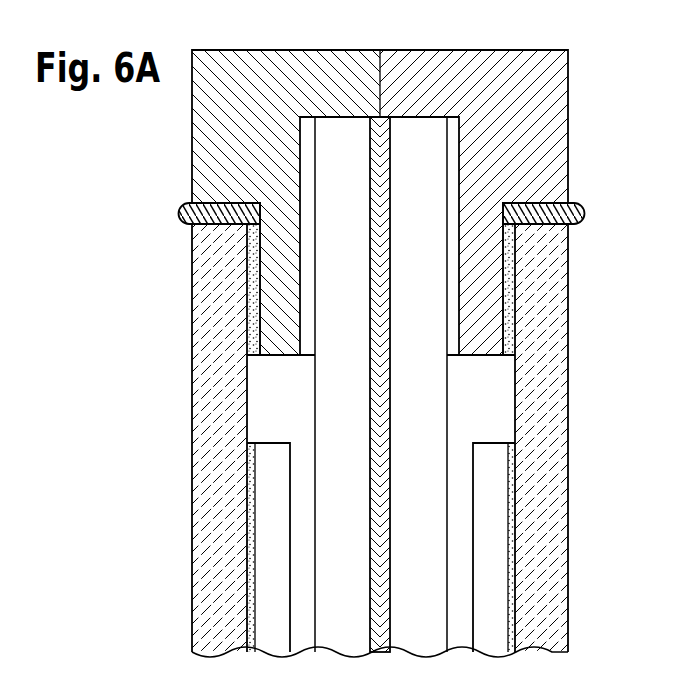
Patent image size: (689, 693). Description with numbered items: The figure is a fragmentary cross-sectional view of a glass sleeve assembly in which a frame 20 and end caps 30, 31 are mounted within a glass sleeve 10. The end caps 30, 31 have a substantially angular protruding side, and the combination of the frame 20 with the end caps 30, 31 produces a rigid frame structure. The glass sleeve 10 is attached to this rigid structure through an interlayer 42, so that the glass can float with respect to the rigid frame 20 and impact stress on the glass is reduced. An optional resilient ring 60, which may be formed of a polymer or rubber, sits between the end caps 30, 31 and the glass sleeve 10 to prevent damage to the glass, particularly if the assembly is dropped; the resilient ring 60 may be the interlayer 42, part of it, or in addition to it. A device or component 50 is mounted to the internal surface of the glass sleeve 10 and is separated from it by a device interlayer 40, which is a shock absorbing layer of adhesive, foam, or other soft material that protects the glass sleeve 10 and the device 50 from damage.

The glass sleeve 10 is at (217, 283).
The frame 20 is at (370, 530).
The end cap 30 is at (505, 50).
The end cap 31 is at (290, 50).
The device interlayer 40 is at (251, 464).
The interlayer 42 is at (250, 328).
The device or component 50 is at (277, 623).
The resilient ring 60 is at (178, 214).